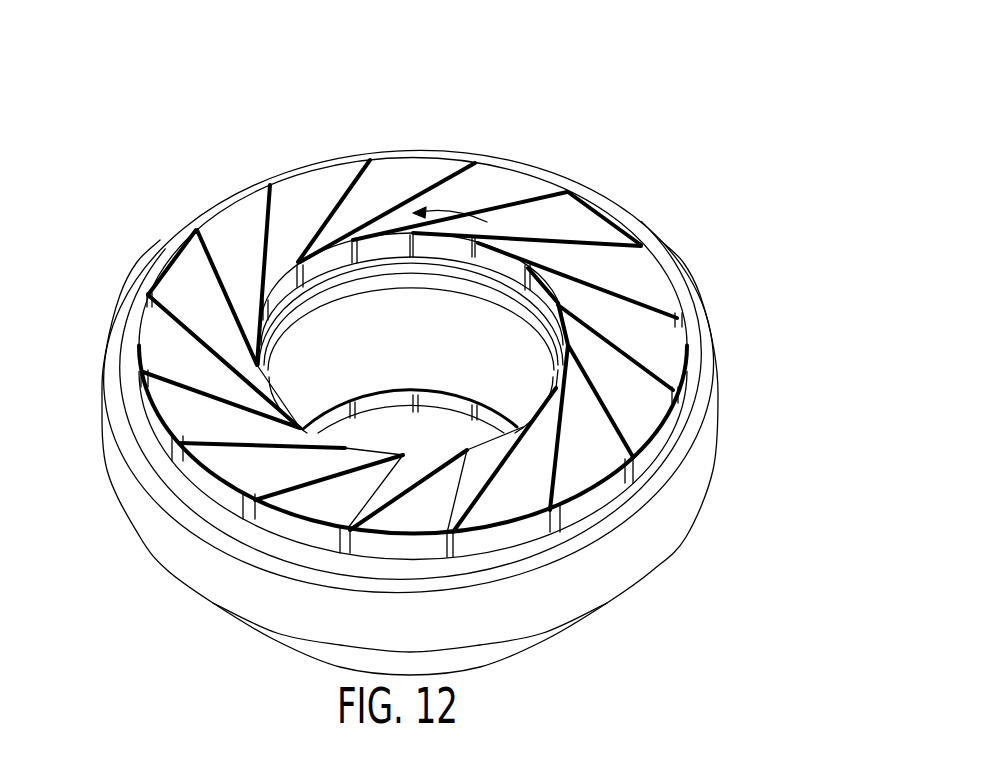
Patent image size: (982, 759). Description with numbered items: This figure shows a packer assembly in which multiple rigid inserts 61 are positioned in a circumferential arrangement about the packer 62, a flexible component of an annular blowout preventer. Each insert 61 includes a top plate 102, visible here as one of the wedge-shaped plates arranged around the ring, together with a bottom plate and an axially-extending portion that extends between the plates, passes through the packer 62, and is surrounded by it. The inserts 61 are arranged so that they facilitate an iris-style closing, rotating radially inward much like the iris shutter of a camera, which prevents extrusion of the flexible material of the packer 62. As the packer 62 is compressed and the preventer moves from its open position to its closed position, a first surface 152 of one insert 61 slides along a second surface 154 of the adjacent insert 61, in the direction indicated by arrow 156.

The insert 61 is at (413, 315).
The packer 62 is at (695, 293).
The top plate 102 is at (600, 217).
The first surface 152 is at (510, 207).
The second surface 154 is at (390, 243).
The arrow 156 is at (448, 207).